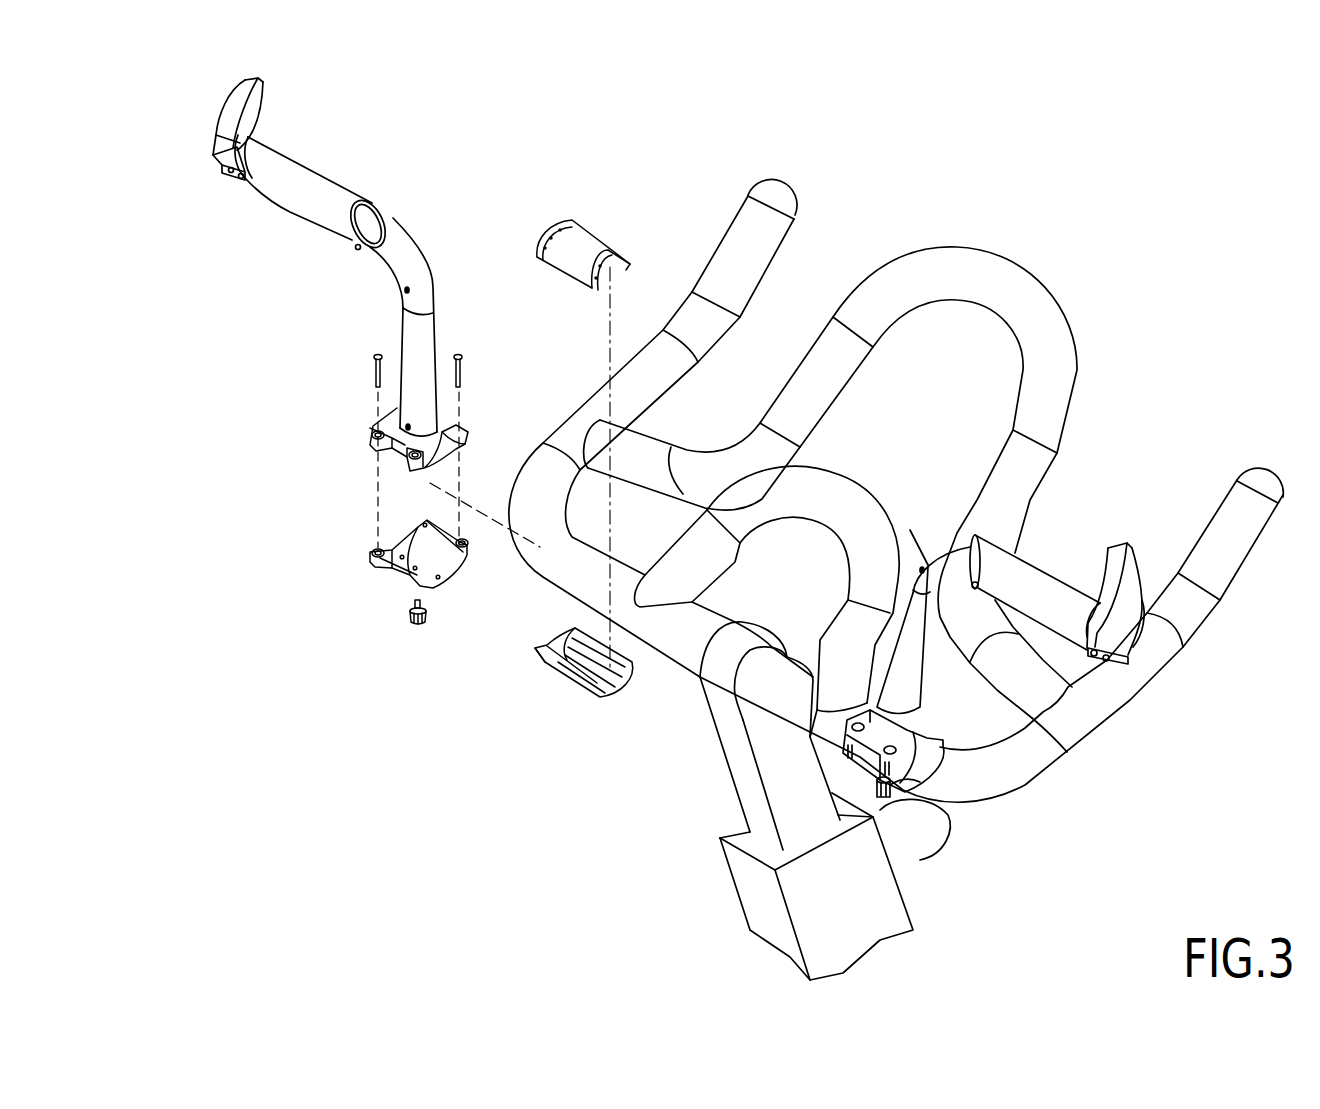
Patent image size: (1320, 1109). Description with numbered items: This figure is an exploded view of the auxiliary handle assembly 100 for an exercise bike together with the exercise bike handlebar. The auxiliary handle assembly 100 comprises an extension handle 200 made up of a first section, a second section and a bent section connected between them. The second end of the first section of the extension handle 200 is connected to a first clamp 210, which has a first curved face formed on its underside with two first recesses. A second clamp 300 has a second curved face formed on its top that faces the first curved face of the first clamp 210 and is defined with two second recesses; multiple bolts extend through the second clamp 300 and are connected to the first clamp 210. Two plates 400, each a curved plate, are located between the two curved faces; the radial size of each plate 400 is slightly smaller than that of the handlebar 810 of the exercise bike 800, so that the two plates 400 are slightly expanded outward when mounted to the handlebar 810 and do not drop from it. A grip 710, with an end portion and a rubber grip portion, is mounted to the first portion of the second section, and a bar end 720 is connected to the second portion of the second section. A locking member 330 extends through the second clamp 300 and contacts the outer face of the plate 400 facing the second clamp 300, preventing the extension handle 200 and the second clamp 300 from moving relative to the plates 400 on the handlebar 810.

The auxiliary handle assembly 100 is at (443, 137).
The extension handle 200 is at (424, 244).
The first clamp 210 is at (397, 455).
The second clamp 300 is at (397, 570).
The locking member 330 is at (417, 628).
The plate 400 is at (588, 237).
The grip 710 is at (333, 170).
The bar end 720 is at (213, 113).
The exercise bike 800 is at (977, 876).
The handlebar 810 is at (684, 695).